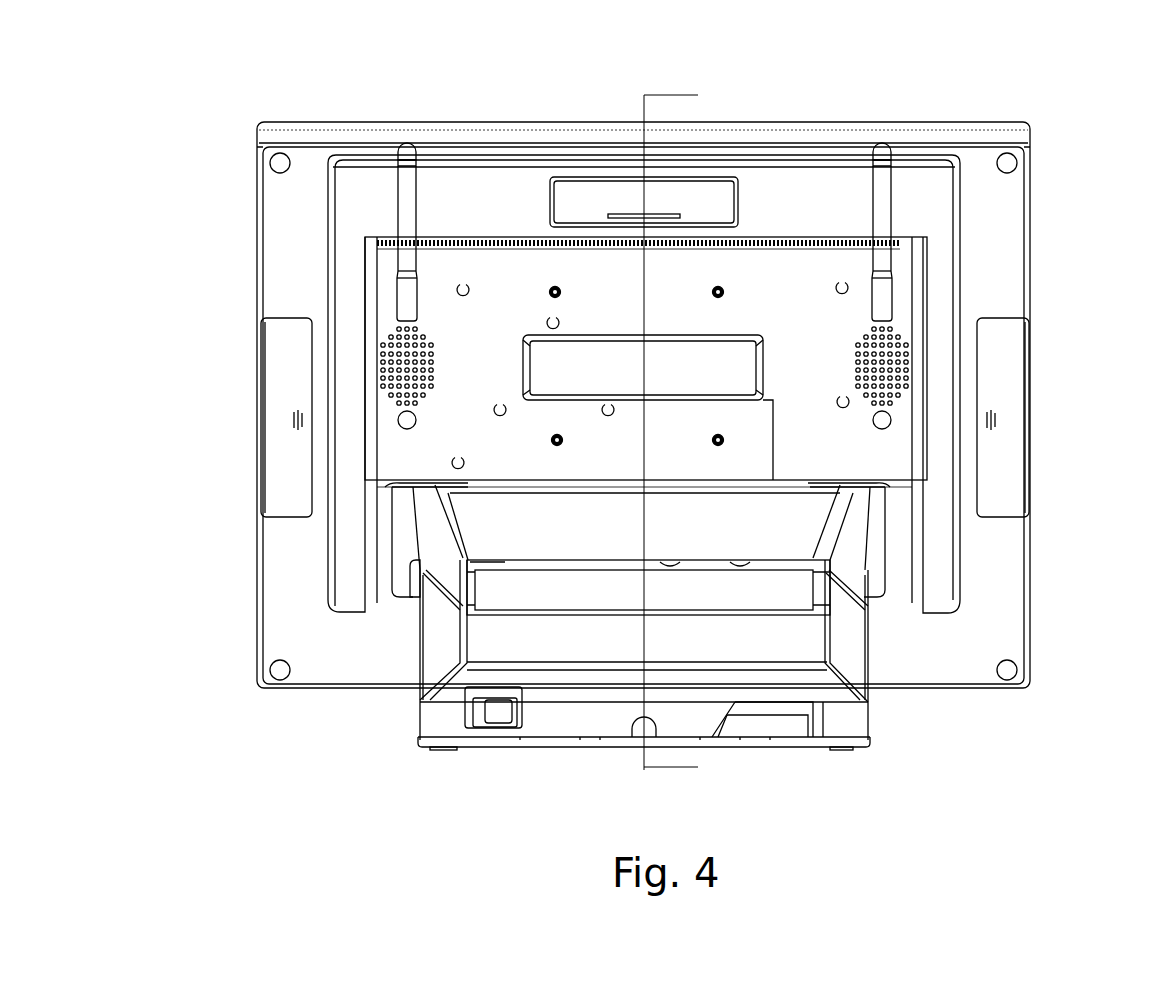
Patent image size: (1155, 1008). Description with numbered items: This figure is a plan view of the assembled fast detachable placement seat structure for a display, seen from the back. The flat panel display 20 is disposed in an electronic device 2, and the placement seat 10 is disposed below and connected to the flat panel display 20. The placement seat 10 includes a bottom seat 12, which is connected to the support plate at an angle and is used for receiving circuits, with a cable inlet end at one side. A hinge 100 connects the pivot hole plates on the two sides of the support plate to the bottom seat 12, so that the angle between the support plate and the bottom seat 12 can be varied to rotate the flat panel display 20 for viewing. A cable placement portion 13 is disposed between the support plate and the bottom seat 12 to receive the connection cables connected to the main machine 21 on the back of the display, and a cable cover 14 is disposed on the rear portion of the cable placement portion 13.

The electronic device 2 is at (631, 422).
The placement seat 10 is at (555, 631).
The bottom seat 12 is at (442, 697).
The cable placement portion 13 is at (470, 561).
The hinge 100 is at (468, 590).
The cable cover 14 is at (793, 533).
The flat panel display 20 is at (997, 275).
The main machine 21 is at (870, 437).